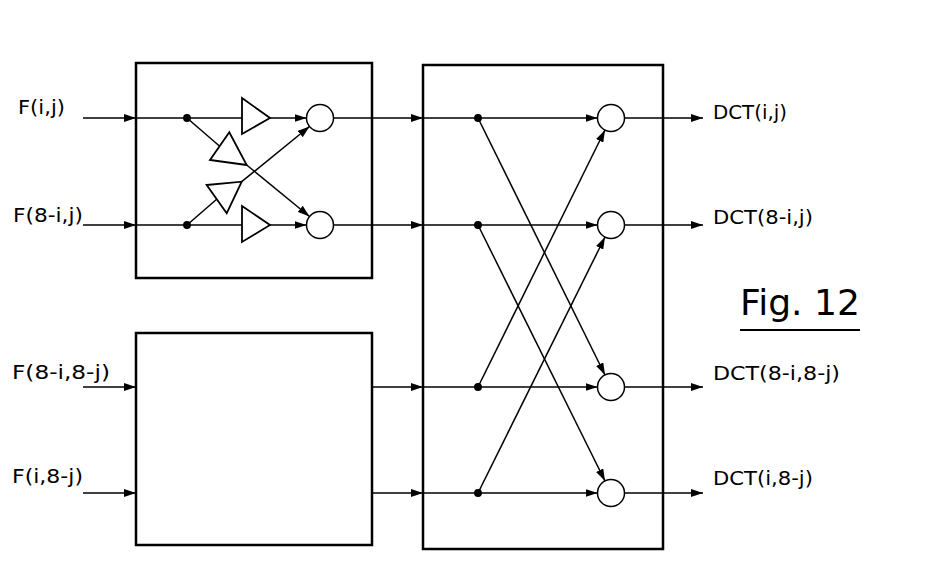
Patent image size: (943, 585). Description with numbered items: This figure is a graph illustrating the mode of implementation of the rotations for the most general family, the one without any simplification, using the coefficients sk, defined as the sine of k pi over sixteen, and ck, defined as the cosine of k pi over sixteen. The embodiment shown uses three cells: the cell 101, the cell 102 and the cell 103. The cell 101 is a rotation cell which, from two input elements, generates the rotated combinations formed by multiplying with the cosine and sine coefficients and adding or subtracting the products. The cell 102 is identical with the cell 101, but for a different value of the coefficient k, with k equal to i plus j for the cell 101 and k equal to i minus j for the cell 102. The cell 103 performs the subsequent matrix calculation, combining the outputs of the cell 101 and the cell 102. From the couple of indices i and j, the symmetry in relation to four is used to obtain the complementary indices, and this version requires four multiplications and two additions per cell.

The cell 101 is at (147, 77).
The cell 102 is at (152, 352).
The cell 103 is at (643, 90).